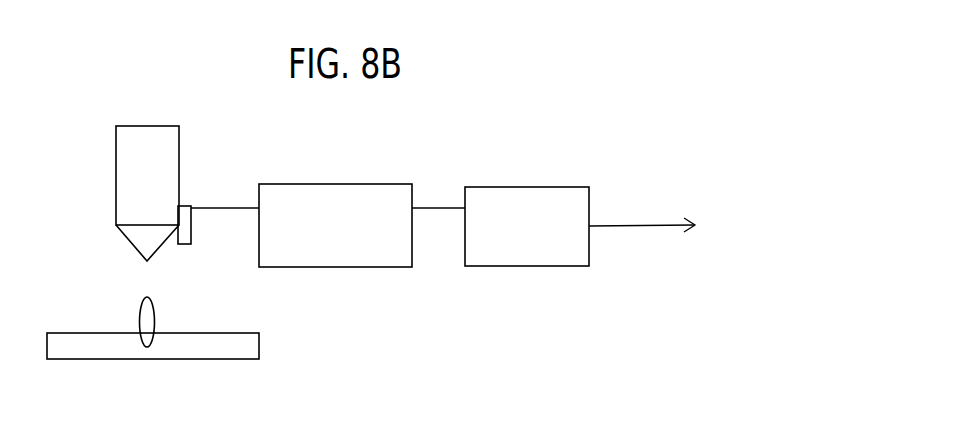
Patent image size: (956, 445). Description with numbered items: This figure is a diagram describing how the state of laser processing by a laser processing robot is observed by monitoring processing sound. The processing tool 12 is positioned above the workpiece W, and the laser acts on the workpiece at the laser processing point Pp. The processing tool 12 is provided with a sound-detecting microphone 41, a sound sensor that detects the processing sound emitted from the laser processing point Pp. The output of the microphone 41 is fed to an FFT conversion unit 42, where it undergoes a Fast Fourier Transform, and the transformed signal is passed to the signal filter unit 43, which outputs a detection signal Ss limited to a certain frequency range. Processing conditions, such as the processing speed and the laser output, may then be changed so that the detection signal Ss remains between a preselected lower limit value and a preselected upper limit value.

The processing tool 12 is at (102, 176).
The sound-detecting microphone 41 is at (191, 236).
The FFT conversion unit 42 is at (348, 184).
The signal filter unit 43 is at (553, 266).
The detection signal Ss is at (658, 228).
The workpiece W is at (259, 342).
The laser processing point Pp is at (134, 324).